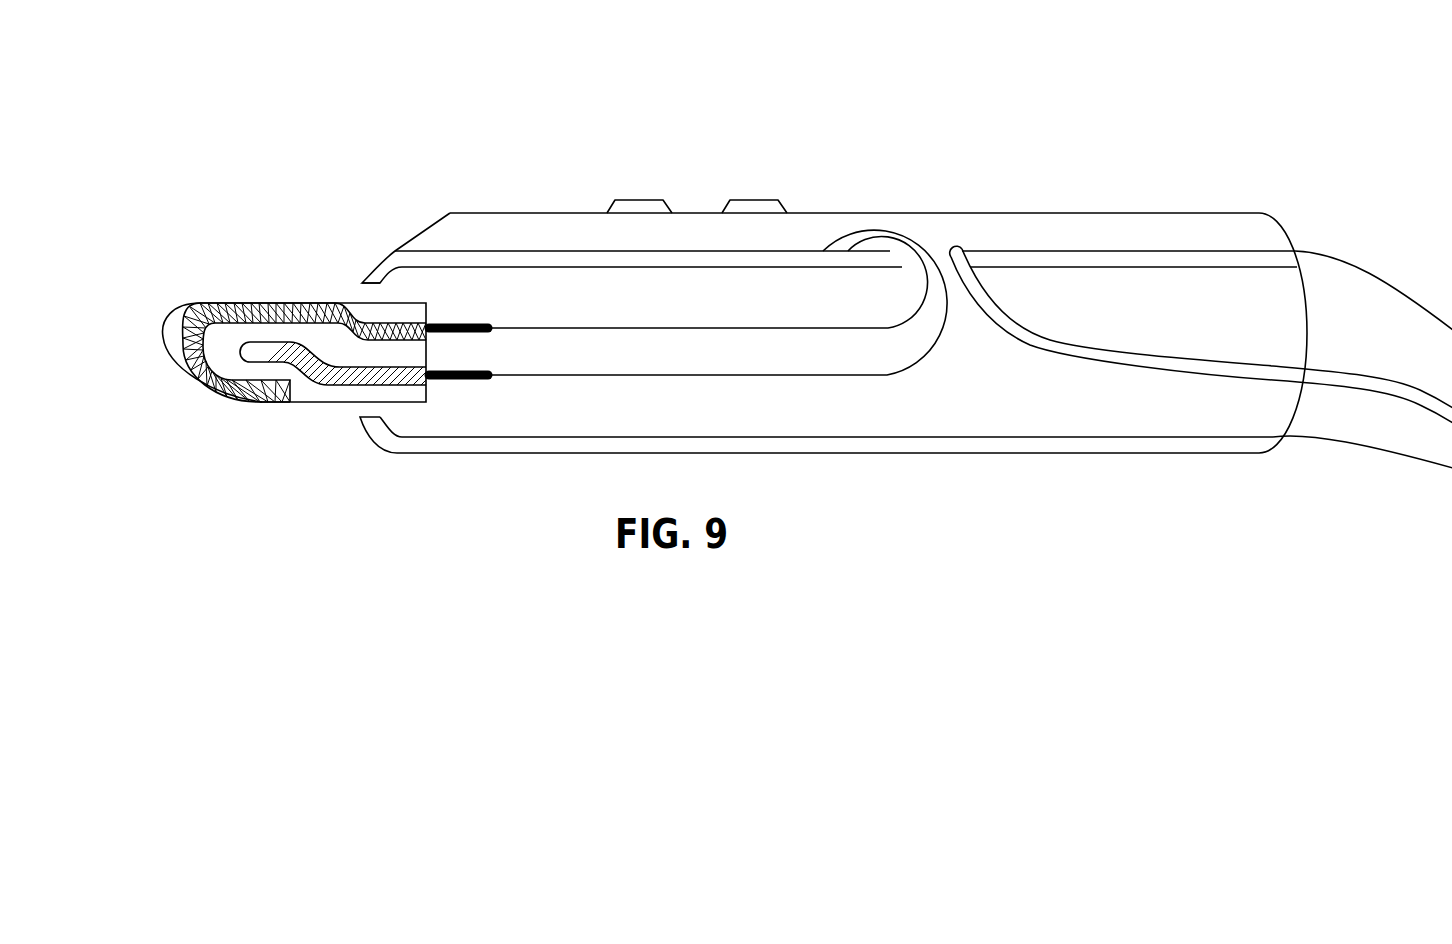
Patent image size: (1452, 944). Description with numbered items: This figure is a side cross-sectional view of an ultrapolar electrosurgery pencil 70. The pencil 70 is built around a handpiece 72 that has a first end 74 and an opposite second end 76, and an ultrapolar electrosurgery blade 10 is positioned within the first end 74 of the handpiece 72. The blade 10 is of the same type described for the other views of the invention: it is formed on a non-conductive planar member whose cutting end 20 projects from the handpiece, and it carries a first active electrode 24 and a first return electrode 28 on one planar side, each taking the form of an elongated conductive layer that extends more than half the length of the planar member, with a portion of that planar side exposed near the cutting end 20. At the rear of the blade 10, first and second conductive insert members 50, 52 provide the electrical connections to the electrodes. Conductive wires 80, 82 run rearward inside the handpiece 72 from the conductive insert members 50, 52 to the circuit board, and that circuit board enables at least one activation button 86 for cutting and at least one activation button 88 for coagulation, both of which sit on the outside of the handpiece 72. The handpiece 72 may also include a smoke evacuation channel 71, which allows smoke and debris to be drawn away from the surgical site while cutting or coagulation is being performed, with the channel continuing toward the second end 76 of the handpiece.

The ultrapolar electrosurgery blade 10 is at (200, 302).
The cutting end 20 is at (158, 335).
The first active electrode 24 is at (257, 312).
The first return electrode 28 is at (322, 368).
The first conductive insert member 50 is at (463, 323).
The second conductive insert member 52 is at (462, 378).
The ultrapolar electrosurgery pencil 70 is at (783, 125).
The smoke evacuation channel 71 is at (970, 390).
The handpiece 72 is at (837, 212).
The first end 74 is at (356, 283).
The second end 76 is at (1315, 298).
The conductive wire 80 is at (713, 330).
The conductive wire 82 is at (713, 376).
The activation button for cutting 86 is at (628, 198).
The activation button for coagulation 88 is at (740, 198).